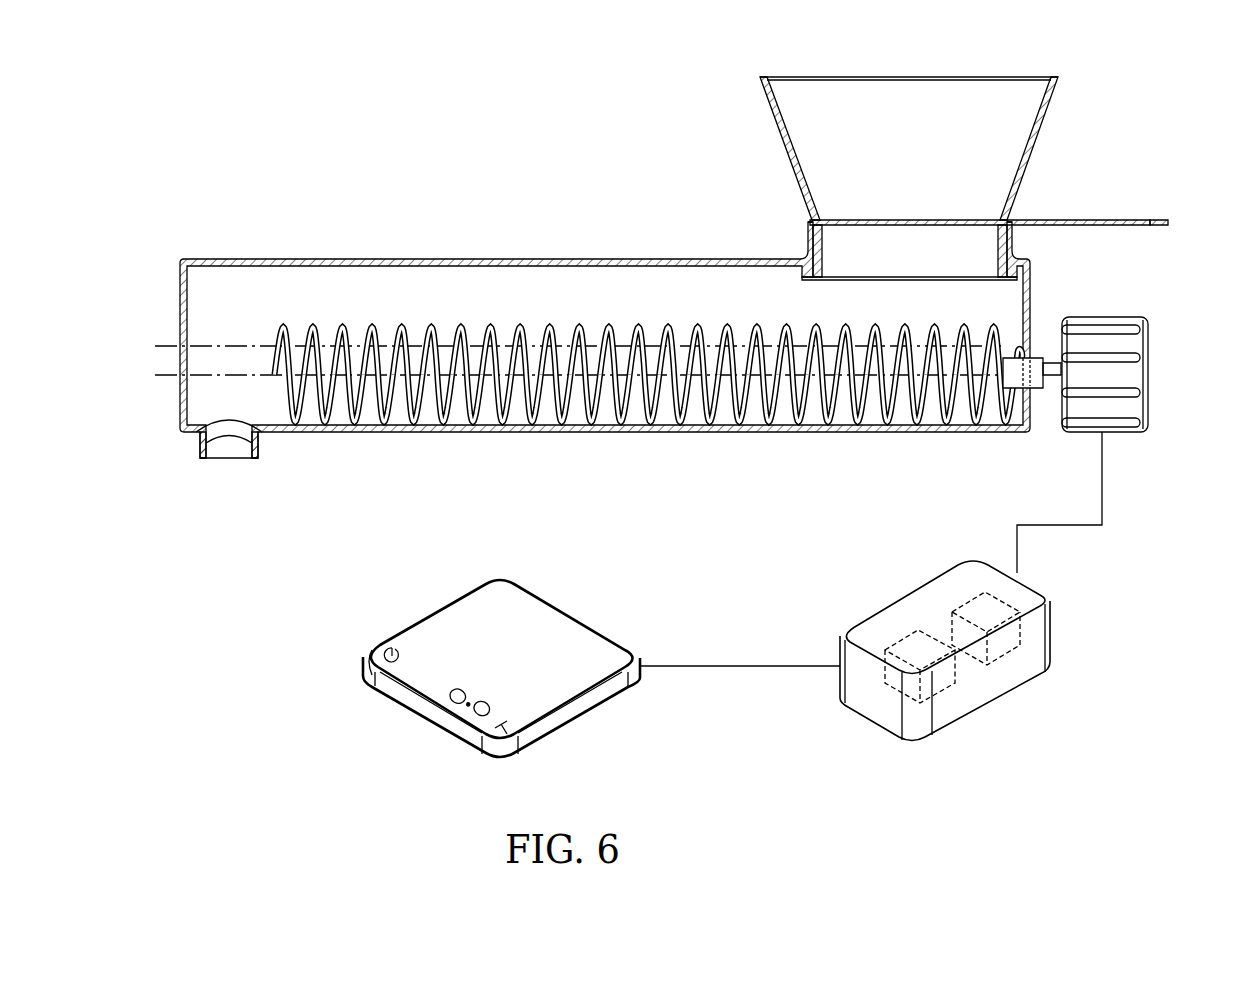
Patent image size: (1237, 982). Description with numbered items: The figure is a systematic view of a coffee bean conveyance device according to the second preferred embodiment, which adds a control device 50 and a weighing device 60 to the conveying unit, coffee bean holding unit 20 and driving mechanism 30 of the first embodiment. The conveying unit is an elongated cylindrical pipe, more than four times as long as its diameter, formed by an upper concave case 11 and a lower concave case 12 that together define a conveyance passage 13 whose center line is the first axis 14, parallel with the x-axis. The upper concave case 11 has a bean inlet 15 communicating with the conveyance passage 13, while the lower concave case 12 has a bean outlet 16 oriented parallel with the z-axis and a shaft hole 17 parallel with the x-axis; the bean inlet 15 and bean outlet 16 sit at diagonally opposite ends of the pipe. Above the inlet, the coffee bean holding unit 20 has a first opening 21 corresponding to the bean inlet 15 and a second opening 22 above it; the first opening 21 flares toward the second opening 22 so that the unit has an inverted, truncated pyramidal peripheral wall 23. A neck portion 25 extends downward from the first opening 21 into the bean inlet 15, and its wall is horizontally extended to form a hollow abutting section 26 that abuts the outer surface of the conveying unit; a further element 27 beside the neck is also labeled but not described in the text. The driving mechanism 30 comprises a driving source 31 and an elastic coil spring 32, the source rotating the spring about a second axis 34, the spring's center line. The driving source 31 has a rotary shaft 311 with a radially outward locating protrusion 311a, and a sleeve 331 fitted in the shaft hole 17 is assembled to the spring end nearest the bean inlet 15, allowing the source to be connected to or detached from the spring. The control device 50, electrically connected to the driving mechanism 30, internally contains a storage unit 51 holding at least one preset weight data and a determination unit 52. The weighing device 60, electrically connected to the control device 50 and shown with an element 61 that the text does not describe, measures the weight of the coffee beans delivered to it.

The upper concave case 11 is at (180, 259).
The lower concave case 12 is at (180, 345).
The conveyance passage 13 is at (350, 305).
The first axis 14 is at (240, 345).
The bean inlet 15 is at (806, 261).
The bean outlet 16 is at (236, 460).
The shaft hole 17 is at (1010, 358).
The coffee bean holding unit 20 is at (863, 131).
The first opening 21 is at (912, 220).
The second opening 22 is at (910, 77).
The peripheral wall 23 is at (1036, 145).
The neck portion 25 is at (1006, 226).
The abutting section 26 is at (808, 224).
The gate plate handle end 27 is at (1150, 220).
The driving mechanism 30 is at (1141, 436).
The driving source 31 is at (1100, 372).
The coil spring 32 is at (447, 430).
The second axis 34 is at (590, 430).
The rotary shaft 311 is at (1053, 378).
The locating protrusion 311a is at (1043, 360).
The sleeve 331 is at (1007, 428).
The control device 50 is at (983, 649).
The storage unit 51 is at (905, 637).
The determination unit 52 is at (1014, 655).
The weighing device 60 is at (451, 668).
The display 61 is at (480, 700).